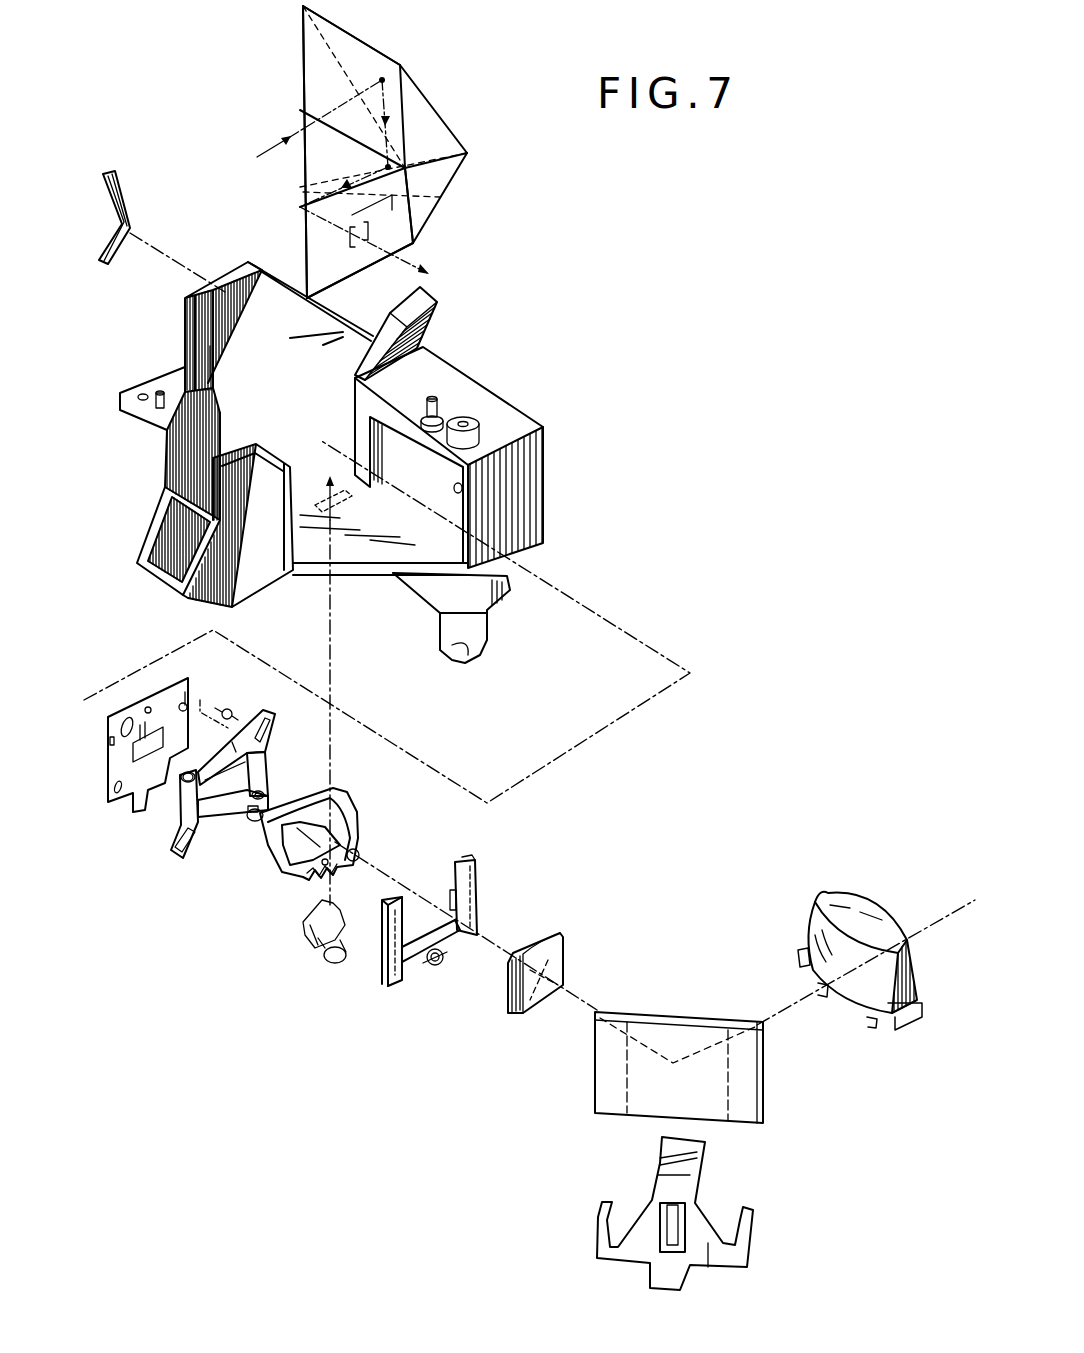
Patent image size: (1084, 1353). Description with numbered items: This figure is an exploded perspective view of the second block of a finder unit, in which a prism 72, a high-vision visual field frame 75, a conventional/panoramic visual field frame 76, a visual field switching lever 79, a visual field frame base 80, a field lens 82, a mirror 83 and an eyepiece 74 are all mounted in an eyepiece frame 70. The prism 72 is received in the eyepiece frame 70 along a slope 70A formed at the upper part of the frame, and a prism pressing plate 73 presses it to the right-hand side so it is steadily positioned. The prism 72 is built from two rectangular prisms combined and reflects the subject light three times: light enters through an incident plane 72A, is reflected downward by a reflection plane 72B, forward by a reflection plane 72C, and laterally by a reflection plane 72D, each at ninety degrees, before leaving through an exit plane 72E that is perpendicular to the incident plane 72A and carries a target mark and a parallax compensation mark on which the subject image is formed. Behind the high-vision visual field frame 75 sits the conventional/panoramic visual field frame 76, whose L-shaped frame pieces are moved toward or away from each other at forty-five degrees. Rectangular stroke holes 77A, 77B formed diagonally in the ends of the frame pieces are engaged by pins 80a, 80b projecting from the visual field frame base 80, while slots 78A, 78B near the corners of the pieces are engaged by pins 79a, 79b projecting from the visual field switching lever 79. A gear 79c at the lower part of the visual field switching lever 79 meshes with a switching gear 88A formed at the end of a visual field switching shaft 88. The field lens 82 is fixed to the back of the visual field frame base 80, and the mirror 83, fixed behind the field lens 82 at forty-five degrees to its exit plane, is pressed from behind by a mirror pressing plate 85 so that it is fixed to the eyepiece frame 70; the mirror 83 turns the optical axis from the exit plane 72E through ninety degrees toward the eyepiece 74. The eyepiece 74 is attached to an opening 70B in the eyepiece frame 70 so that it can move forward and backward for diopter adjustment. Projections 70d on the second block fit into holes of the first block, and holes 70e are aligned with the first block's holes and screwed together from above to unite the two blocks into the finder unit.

The eyepiece frame 70 is at (520, 382).
The slope 70A is at (265, 387).
The opening 70B is at (462, 488).
The projection 70d is at (159, 392).
The hole 70e is at (140, 397).
The prism 72 is at (474, 170).
The incident plane 72A is at (313, 68).
The reflection plane 72B is at (382, 67).
The reflection plane 72C is at (428, 185).
The reflection plane 72D is at (300, 207).
The exit plane 72E is at (315, 257).
The prism pressing plate 73 is at (105, 173).
The eyepiece 74 is at (817, 897).
The high-vision (H) visual field frame 75 is at (108, 780).
The conventional/panoramic (CP) visual field frame 76 is at (196, 850).
The stroke hole 77A is at (175, 848).
The stroke hole 77B is at (258, 730).
The slot 78A is at (182, 780).
The slot 78B is at (262, 790).
The visual field switching lever 79 is at (280, 873).
The pin 79a is at (250, 818).
The pin 79b is at (359, 850).
The gear 79c is at (345, 873).
The visual field frame base 80 is at (431, 933).
The pin 80a is at (380, 970).
The pin 80b is at (467, 853).
The field lens 82 is at (530, 1017).
The mirror 83 is at (598, 1097).
The mirror pressing plate 85 is at (692, 1207).
The visual field switching shaft 88 is at (292, 951).
The switching gear 88A is at (310, 907).